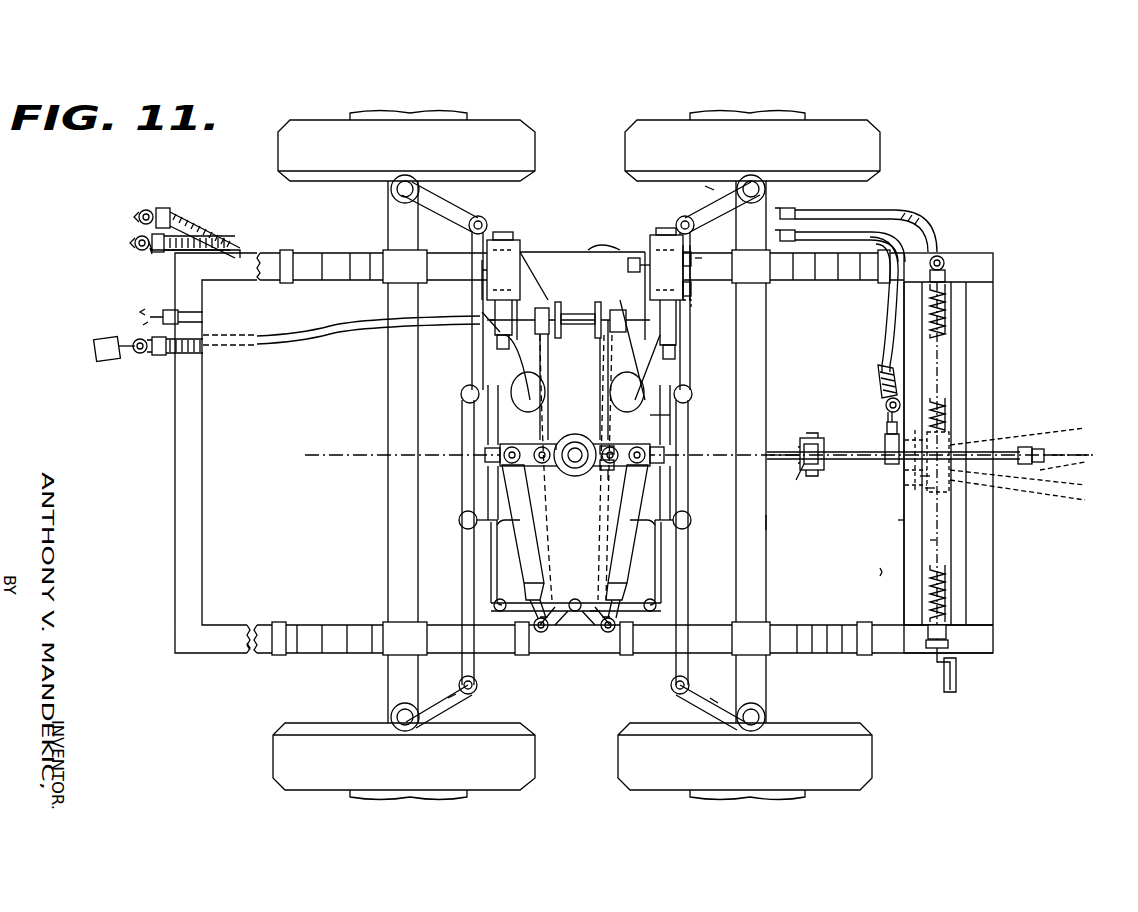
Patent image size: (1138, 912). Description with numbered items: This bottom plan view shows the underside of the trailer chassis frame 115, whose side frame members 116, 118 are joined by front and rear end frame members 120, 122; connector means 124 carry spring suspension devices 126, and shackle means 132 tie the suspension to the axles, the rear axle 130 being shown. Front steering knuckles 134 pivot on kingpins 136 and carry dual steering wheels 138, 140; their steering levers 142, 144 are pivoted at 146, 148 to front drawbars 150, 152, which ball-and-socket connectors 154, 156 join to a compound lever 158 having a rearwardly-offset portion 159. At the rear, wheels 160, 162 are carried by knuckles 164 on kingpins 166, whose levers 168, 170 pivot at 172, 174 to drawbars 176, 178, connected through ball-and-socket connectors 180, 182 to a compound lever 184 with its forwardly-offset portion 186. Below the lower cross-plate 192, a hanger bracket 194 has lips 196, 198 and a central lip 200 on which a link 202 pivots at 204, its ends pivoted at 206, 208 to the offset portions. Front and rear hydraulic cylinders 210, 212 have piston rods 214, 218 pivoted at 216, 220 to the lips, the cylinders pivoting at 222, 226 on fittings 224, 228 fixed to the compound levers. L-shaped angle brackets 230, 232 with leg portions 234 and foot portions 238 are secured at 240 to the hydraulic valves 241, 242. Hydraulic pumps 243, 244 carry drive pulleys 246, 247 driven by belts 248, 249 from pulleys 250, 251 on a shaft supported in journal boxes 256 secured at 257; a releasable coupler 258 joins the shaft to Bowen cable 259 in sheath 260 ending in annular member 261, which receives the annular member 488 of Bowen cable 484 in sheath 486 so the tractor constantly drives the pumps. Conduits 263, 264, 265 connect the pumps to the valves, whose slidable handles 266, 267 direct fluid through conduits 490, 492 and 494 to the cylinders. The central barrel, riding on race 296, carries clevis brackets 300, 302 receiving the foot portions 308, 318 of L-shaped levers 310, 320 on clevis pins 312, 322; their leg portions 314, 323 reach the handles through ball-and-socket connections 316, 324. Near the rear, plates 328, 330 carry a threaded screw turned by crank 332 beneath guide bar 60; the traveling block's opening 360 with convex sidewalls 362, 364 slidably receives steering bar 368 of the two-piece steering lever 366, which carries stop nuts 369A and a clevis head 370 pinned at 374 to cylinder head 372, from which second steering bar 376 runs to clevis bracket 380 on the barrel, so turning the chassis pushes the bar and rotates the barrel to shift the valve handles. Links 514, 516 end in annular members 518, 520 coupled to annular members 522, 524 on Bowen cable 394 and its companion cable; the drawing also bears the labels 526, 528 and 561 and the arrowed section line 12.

The section line 12 is at (305, 455).
The frame channel 60 is at (968, 548).
The frame 115 is at (978, 252).
The rear cross member 116 is at (258, 628).
The front cross member 118 is at (270, 252).
The left side frame 120 is at (175, 462).
The right side frame 122 is at (990, 402).
The clamp 124 is at (283, 285).
The cross member segment 126 is at (332, 262).
The side member 130 is at (767, 522).
The post clamp 132 is at (382, 276).
The wheel link 134 is at (418, 205).
The wheel post 136 is at (415, 185).
The rear left wheel 138 is at (273, 732).
The front left wheel 140 is at (278, 154).
The link 142 is at (450, 700).
The upper link 144 is at (450, 200).
The pivot 146 is at (478, 688).
The pivot 148 is at (486, 222).
The arm 150 is at (462, 590).
The rod 152 is at (472, 350).
The ball joint 154 is at (462, 522).
The ball joint 156 is at (462, 396).
The rod 158 is at (486, 445).
The frame 159 is at (495, 565).
The rear right wheel 160 is at (872, 780).
The front right wheel 162 is at (880, 130).
The wheel link 164 is at (695, 228).
The wheel post 166 is at (765, 190).
The link 168 is at (712, 700).
The link 170 is at (712, 188).
The pivot 172 is at (672, 688).
The upper link 174 is at (682, 218).
The arm 176 is at (688, 600).
The rod 178 is at (690, 360).
The ball joint 180 is at (690, 520).
The ball joint 182 is at (692, 393).
The rod 184 is at (668, 490).
The frame 186 is at (658, 580).
The link 192 is at (680, 348).
The bracket 194 is at (575, 662).
The pivot 196 is at (535, 618).
The rod 198 is at (605, 632).
The link 200 is at (572, 600).
The link 202 is at (596, 610).
The pivot 204 is at (592, 598).
The pivot 206 is at (494, 612).
The pivot 208 is at (655, 608).
The frame member 210 is at (493, 540).
The line 212 is at (598, 530).
The rod 214 is at (548, 590).
The rod 216 is at (540, 632).
The frame member 218 is at (660, 560).
The pivot 220 is at (609, 632).
The pivot 222 is at (495, 448).
The pivot 224 is at (500, 466).
The pivot 226 is at (630, 448).
The pivot 228 is at (650, 448).
The bracket 230 is at (485, 296).
The rod 232 is at (683, 245).
The bracket 234 is at (692, 256).
The valve 238 is at (522, 245).
The valve cap 240 is at (520, 238).
The valve 241 is at (487, 266).
The bracket 242 is at (700, 260).
The pulley 243 is at (512, 385).
The link 244 is at (624, 350).
The belt 246 is at (555, 380).
The shaft 247 is at (598, 360).
The disc 248 is at (596, 340).
The disc 249 is at (596, 350).
The disc 250 is at (595, 310).
The spacer 251 is at (598, 322).
The pulley 256 is at (540, 306).
The hub 257 is at (577, 309).
The disc 258 is at (558, 300).
The hose 259 is at (158, 357).
The hose 260 is at (325, 330).
The fitting 261 is at (140, 353).
The hose 263 is at (500, 355).
The fitting 264 is at (495, 330).
The rod 265 is at (680, 318).
The line 266 is at (580, 252).
The line 267 is at (599, 237).
The belt 296 is at (595, 380).
The bracket 300 is at (540, 466).
The block 302 is at (604, 445).
The pin 308 is at (558, 445).
The rod 310 is at (486, 418).
The cylinder 312 is at (523, 532).
The block 314 is at (486, 426).
The housing 316 is at (581, 290).
The block 318 is at (668, 455).
The bracket 320 is at (670, 418).
The cylinder 322 is at (628, 541).
The pin 323 is at (692, 300).
The fitting 324 is at (628, 264).
The screw 328 is at (960, 618).
The frame member 330 is at (970, 285).
The crank 332 is at (936, 672).
The line 360 is at (1000, 435).
The line 362 is at (985, 425).
The fitting 364 is at (1044, 462).
The bracket 366 is at (815, 432).
The rod 368 is at (865, 462).
The line 369A is at (1029, 463).
The box 370 is at (822, 442).
The link 372 is at (800, 466).
The bracket 374 is at (800, 446).
The bracket 376 is at (776, 448).
The hub 380 is at (590, 472).
The fitting 394 is at (786, 230).
The fitting 484 is at (128, 335).
The plug 486 is at (100, 360).
The ring 488 is at (135, 350).
The line 490 is at (552, 512).
The line 492 is at (542, 276).
The pin 494 is at (608, 482).
The ring 514 is at (146, 210).
The ring 516 is at (130, 242).
The clip 518 is at (160, 212).
The bracket 520 is at (150, 240).
The hose 522 is at (170, 212).
The hose 524 is at (140, 252).
The ring 526 is at (885, 400).
The ring 528 is at (944, 258).
The block 561 is at (947, 262).